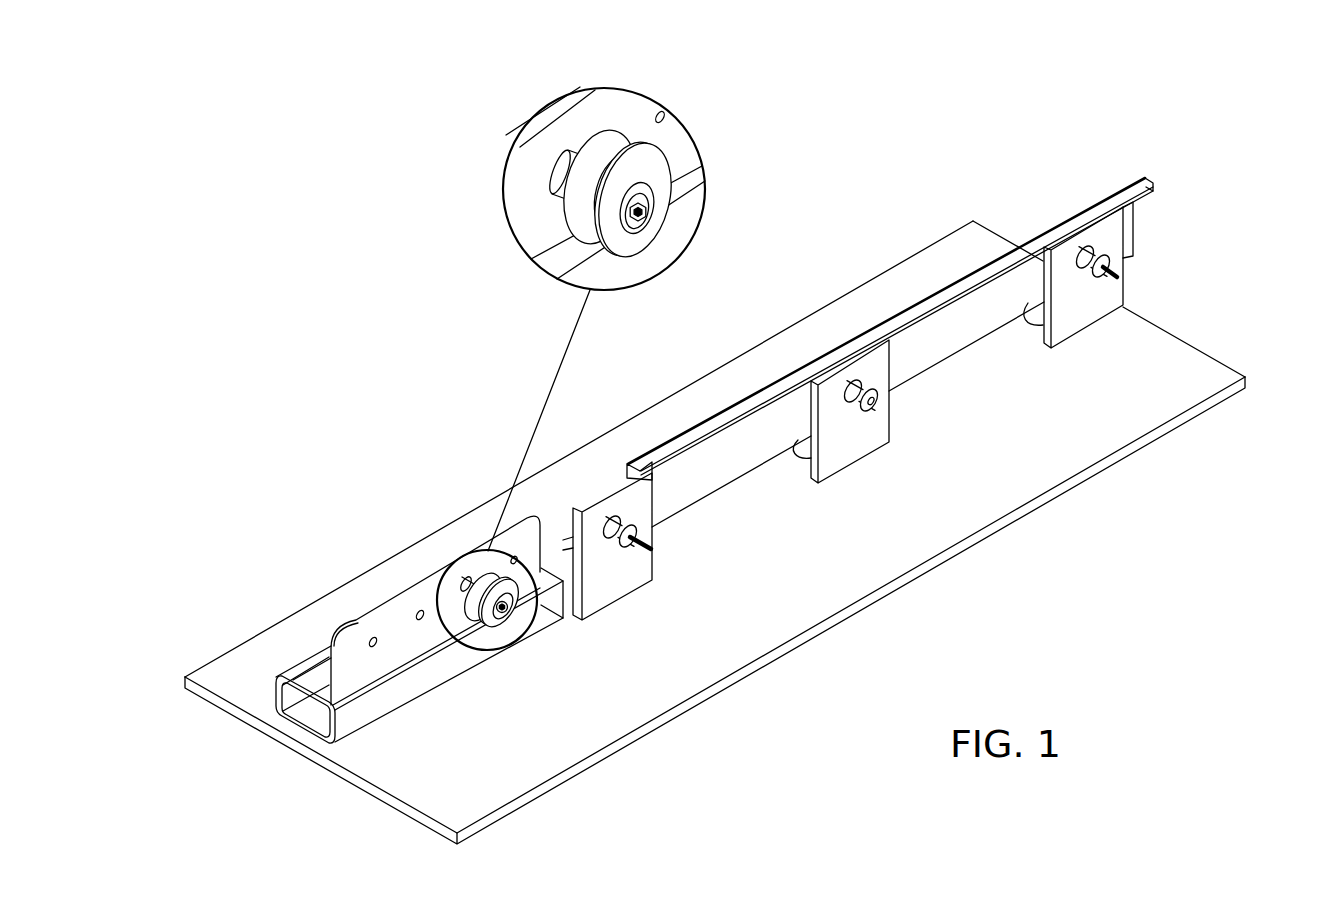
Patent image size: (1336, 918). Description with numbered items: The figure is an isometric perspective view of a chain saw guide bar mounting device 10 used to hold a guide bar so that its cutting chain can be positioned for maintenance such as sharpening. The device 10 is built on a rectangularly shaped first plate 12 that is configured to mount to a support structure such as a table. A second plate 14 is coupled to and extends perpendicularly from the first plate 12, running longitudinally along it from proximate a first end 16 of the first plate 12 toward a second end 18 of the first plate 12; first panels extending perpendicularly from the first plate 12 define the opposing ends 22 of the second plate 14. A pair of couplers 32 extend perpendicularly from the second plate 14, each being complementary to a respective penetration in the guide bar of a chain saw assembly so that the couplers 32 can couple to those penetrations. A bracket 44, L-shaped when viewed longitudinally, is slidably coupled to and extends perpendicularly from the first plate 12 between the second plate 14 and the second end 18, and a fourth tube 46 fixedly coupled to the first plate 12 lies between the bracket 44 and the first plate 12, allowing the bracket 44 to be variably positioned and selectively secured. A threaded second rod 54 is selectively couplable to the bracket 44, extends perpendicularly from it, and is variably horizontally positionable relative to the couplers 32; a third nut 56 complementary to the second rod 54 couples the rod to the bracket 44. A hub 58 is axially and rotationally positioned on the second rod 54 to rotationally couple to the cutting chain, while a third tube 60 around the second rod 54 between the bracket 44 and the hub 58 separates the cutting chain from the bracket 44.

The chain saw guide bar mounting device 10 is at (1004, 156).
The first plate 12 is at (1196, 377).
The second plate 14 is at (638, 502).
The first end 16 is at (1160, 322).
The second end 18 is at (737, 538).
The opposing ends 22 is at (576, 508).
The couplers 32 is at (652, 550).
The bracket 44 is at (393, 592).
The fourth tube 46 is at (327, 736).
The second rod 54 is at (648, 213).
The third nut 56 is at (651, 203).
The hub 58 is at (687, 141).
The third tube 60 is at (611, 368).